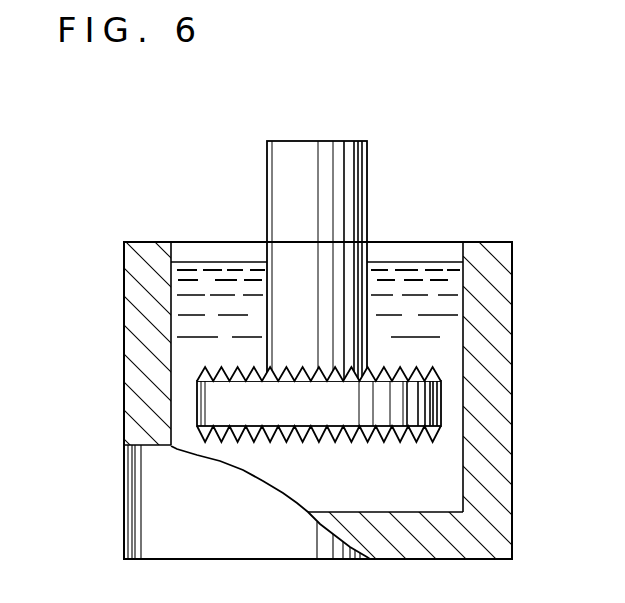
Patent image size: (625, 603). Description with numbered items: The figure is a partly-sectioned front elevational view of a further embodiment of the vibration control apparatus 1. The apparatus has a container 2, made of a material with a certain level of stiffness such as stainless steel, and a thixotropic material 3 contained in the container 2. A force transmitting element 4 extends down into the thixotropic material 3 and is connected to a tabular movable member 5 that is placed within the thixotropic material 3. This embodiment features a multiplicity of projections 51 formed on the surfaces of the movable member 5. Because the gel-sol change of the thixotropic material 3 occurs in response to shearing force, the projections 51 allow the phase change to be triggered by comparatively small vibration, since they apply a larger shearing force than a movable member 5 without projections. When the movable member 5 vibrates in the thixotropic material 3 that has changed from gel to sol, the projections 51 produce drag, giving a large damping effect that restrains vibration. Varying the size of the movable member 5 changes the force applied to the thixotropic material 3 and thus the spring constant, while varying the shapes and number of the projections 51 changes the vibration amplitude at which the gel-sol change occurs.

The vibration control apparatus 1 is at (112, 398).
The container 2 is at (512, 258).
The thixotropic material 3 is at (455, 330).
The force transmitting element 4 is at (350, 141).
The movable member 5 is at (445, 402).
The projections 51 is at (430, 443).